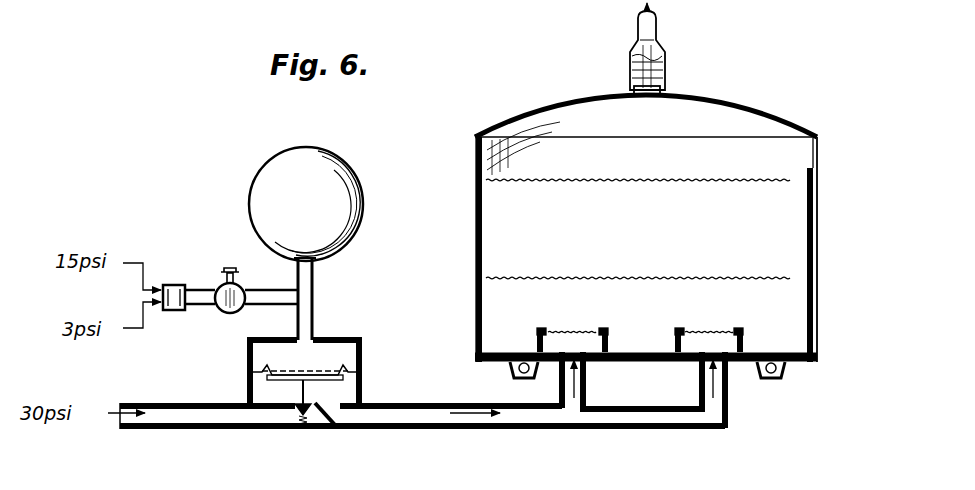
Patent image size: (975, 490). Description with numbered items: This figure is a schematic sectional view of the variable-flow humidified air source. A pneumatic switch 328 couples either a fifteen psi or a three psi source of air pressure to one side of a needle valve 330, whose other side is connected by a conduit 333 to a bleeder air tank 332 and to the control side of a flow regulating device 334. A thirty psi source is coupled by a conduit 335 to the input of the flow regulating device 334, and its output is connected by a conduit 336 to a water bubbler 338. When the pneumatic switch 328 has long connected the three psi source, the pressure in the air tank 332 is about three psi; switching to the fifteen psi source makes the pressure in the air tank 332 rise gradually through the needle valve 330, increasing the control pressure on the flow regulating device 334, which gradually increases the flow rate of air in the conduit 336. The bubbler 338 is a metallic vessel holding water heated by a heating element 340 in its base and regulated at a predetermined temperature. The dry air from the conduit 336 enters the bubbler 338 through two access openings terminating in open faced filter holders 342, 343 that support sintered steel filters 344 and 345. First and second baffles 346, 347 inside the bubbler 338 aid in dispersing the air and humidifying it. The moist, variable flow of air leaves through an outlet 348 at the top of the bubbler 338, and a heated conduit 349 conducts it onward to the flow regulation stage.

The pneumatic switch 328 is at (183, 285).
The needle valve 330 is at (229, 314).
The bleeder air tank 332 is at (365, 182).
The conduit 333 is at (318, 302).
The flow regulating device 334 is at (346, 337).
The conduit 335 is at (182, 403).
The conduit 336 is at (455, 426).
The water bubbler 338 is at (789, 124).
The heating element 340 is at (786, 374).
The filter holder 342 is at (746, 338).
The filter holder 343 is at (538, 336).
The sintered steel filter 344 is at (745, 332).
The sintered steel filter 345 is at (547, 330).
The first baffle 346 is at (768, 280).
The second baffle 347 is at (808, 175).
The outlet 348 is at (667, 91).
The conduit 349 is at (663, 46).